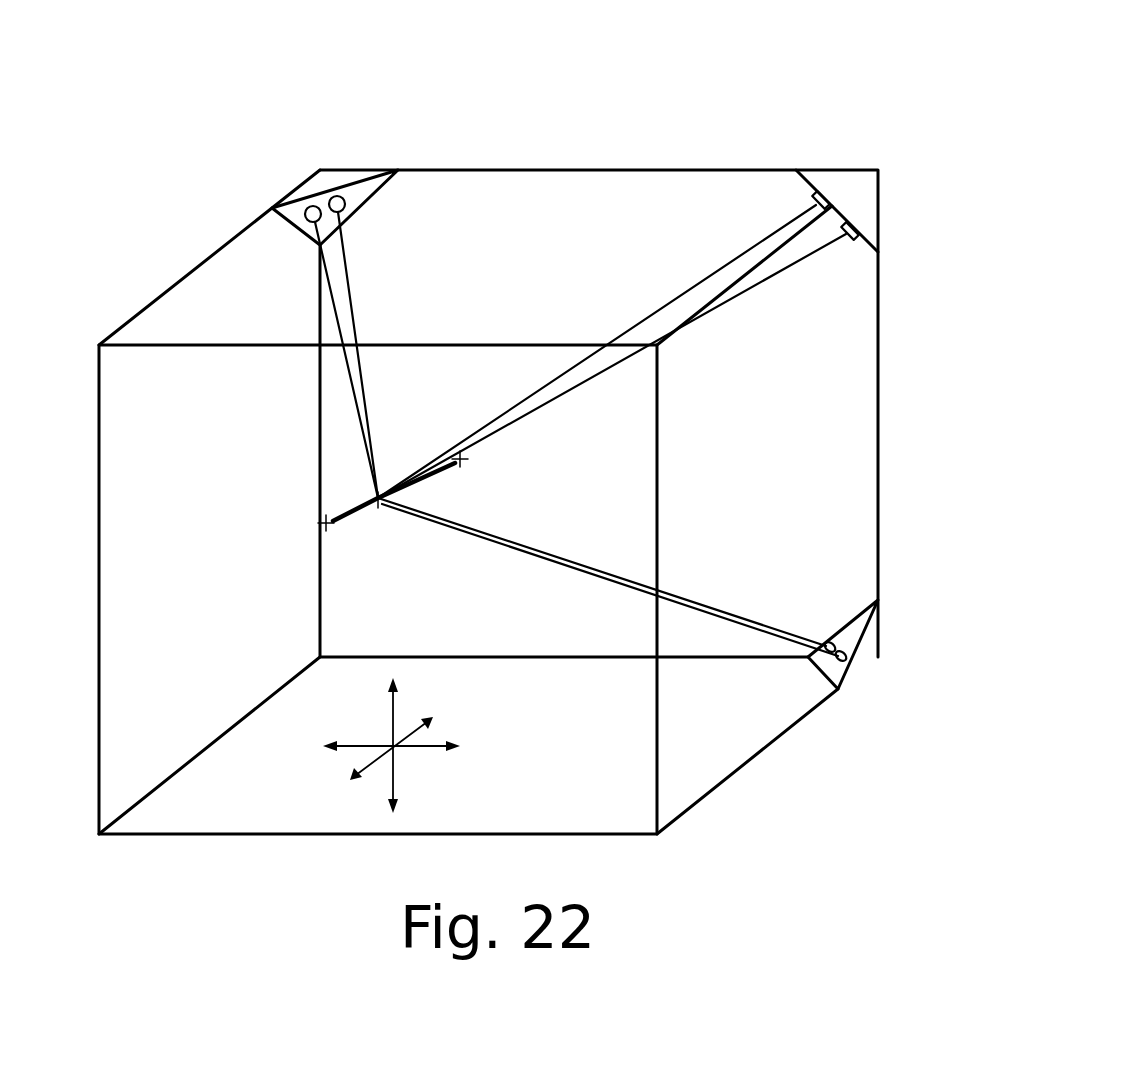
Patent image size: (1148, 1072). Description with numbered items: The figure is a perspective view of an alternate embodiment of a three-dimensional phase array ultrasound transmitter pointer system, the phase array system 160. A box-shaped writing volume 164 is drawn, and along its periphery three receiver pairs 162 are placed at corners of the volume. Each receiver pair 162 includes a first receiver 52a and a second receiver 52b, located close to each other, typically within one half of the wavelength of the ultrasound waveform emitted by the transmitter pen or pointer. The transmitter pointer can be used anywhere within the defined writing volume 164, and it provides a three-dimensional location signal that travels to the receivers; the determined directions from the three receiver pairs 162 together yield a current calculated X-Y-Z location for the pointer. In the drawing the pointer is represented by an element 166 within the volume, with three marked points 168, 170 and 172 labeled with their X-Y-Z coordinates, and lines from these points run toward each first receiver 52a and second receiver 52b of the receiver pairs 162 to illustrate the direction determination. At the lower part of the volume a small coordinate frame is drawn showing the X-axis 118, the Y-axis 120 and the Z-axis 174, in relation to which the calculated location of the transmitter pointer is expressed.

The phase array system 160 is at (459, 92).
The writing volume 164 is at (523, 170).
The receiver pair 162 is at (313, 188).
The first receiver 52a is at (305, 215).
The second receiver 52b is at (337, 196).
The probe body 166 is at (366, 531).
The first reference point 168 is at (324, 518).
The second reference point 170 is at (379, 490).
The third reference point 172 is at (470, 459).
The X-axis 118 is at (452, 726).
The Z-axis 174 is at (368, 675).
The Y-axis 120 is at (312, 795).